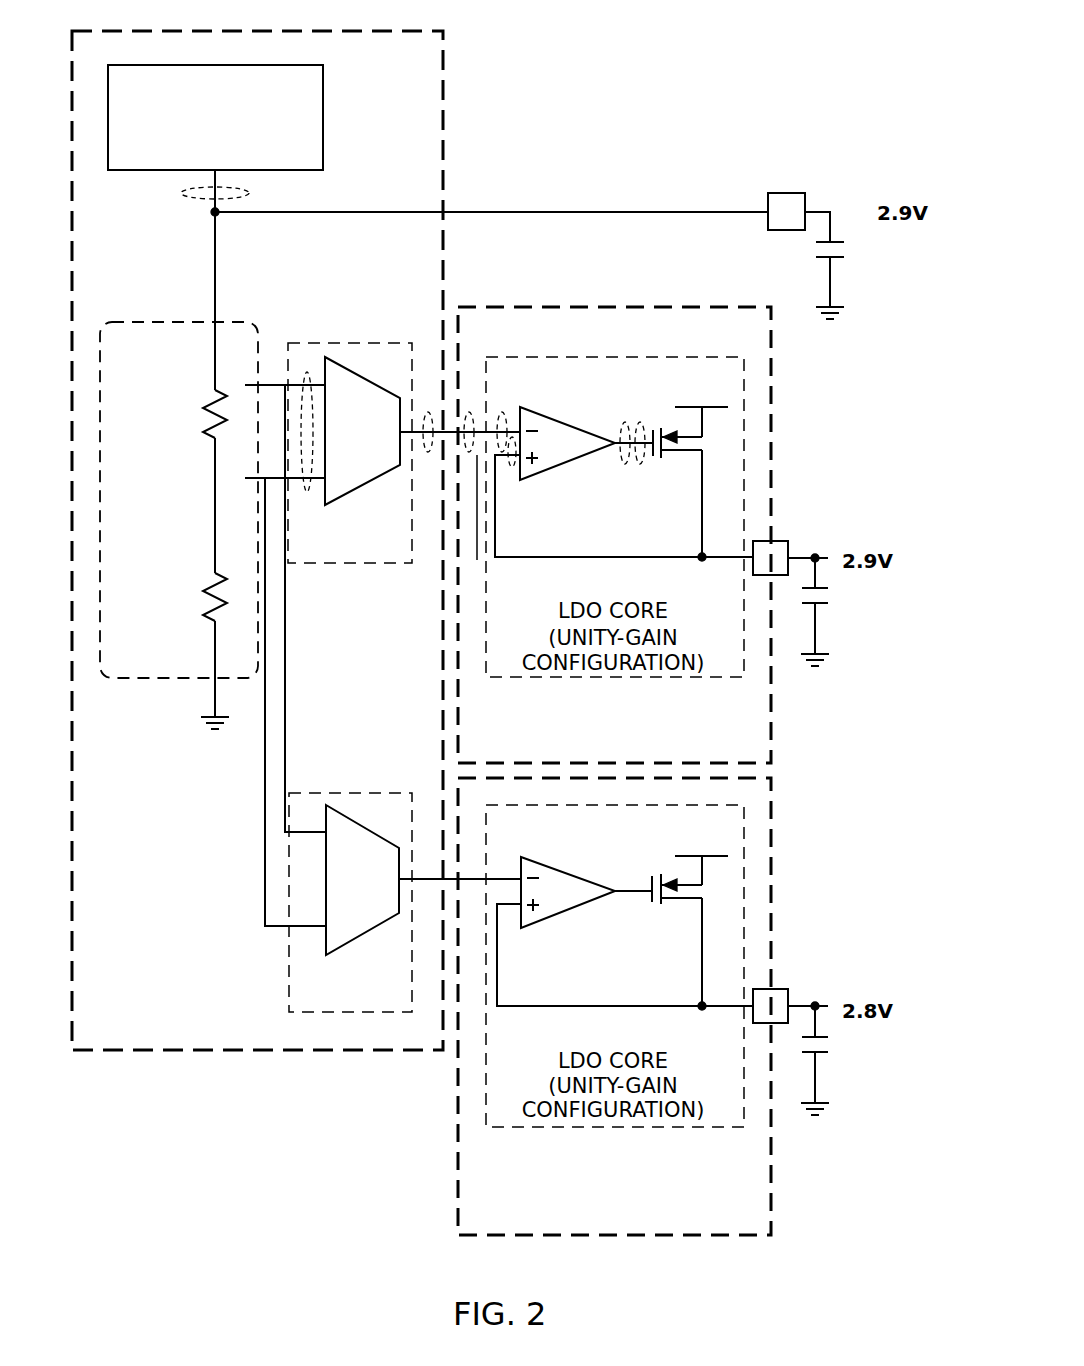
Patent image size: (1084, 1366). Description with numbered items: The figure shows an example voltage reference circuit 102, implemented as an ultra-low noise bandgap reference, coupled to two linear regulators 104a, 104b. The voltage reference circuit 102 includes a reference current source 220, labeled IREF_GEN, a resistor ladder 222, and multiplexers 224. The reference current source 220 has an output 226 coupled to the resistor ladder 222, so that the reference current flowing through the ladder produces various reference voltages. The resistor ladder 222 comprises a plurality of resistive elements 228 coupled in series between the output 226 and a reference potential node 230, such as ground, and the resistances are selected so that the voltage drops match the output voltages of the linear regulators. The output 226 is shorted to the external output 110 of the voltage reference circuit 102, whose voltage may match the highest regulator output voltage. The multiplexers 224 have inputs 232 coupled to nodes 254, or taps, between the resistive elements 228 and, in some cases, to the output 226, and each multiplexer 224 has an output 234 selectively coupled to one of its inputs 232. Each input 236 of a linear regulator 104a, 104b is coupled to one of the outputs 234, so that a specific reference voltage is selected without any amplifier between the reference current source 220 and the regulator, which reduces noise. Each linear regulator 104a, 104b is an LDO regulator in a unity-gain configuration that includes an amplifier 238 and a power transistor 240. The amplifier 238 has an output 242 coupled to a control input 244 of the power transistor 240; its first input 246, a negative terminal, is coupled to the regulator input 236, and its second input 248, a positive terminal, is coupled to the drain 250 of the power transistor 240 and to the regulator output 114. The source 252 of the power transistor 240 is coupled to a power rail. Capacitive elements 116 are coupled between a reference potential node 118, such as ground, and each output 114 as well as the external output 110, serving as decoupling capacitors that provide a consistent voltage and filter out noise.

The voltage reference circuit 102 is at (388, 31).
The linear regulator 104a is at (676, 307).
The linear regulator 104b is at (728, 1235).
The external output 110 is at (785, 193).
The output 114 is at (775, 541).
The capacitive element 116 is at (825, 258).
The reference potential node 118 is at (830, 322).
The reference current source 220 is at (282, 170).
The resistor ladder 222 is at (160, 680).
The multiplexer 224 is at (368, 563).
The output 226 is at (205, 198).
The resistive element 228 is at (213, 395).
The reference potential node 230 is at (215, 731).
The input 232 is at (306, 370).
The output 234 is at (428, 453).
The input 236 is at (470, 412).
The amplifier 238 is at (540, 414).
The power transistor 240 is at (656, 430).
The output 242 is at (625, 466).
The control input 244 is at (641, 466).
The first input 246 is at (503, 412).
The second input 248 is at (512, 468).
The drain 250 is at (703, 493).
The source 252 is at (700, 407).
The node 254 is at (213, 505).